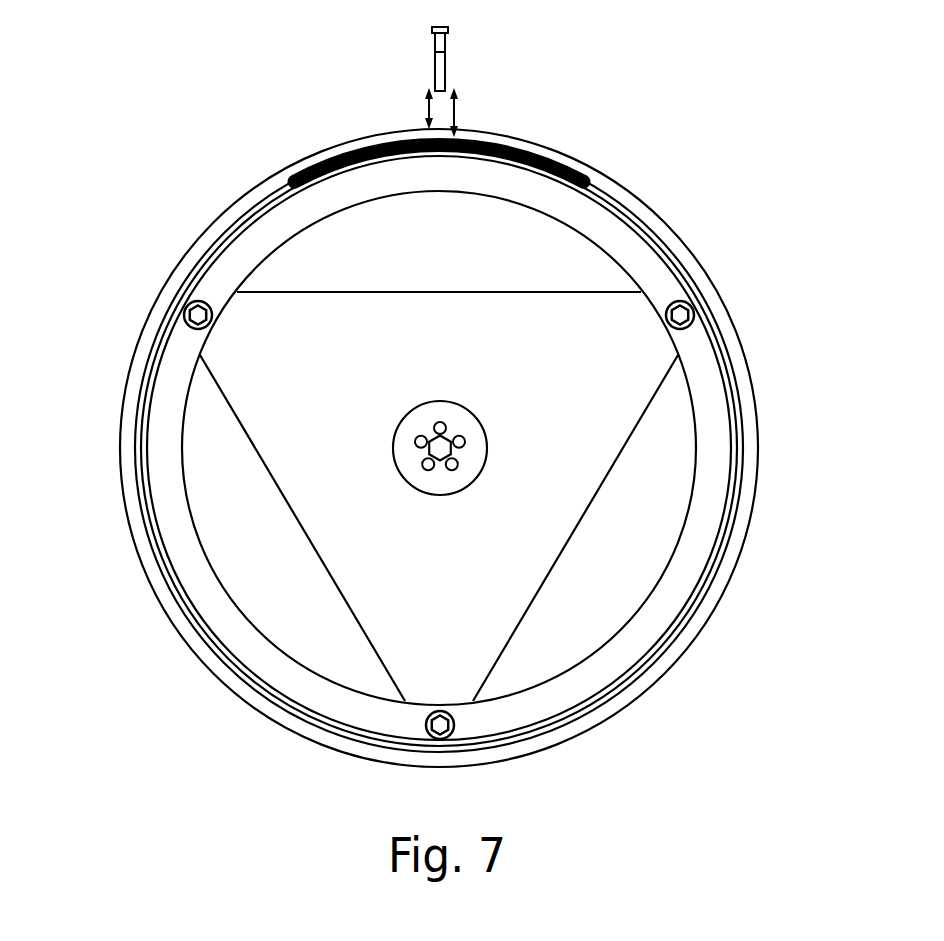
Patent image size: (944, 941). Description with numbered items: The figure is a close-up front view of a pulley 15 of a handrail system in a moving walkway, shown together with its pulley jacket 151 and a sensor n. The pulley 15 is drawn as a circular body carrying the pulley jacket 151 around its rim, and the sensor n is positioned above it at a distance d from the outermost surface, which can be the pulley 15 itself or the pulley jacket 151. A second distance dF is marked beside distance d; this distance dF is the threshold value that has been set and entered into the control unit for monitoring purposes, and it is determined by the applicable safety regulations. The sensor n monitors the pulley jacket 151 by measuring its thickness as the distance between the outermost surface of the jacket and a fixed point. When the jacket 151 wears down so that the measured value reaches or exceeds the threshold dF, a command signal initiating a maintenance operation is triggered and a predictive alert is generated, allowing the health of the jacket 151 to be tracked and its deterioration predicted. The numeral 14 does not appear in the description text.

The hub assembly 14 is at (130, 118).
The pulley 15 is at (270, 155).
The pulley jacket 151 is at (645, 218).
The sensor n is at (445, 68).
The distance d is at (416, 108).
The threshold value dF is at (470, 112).